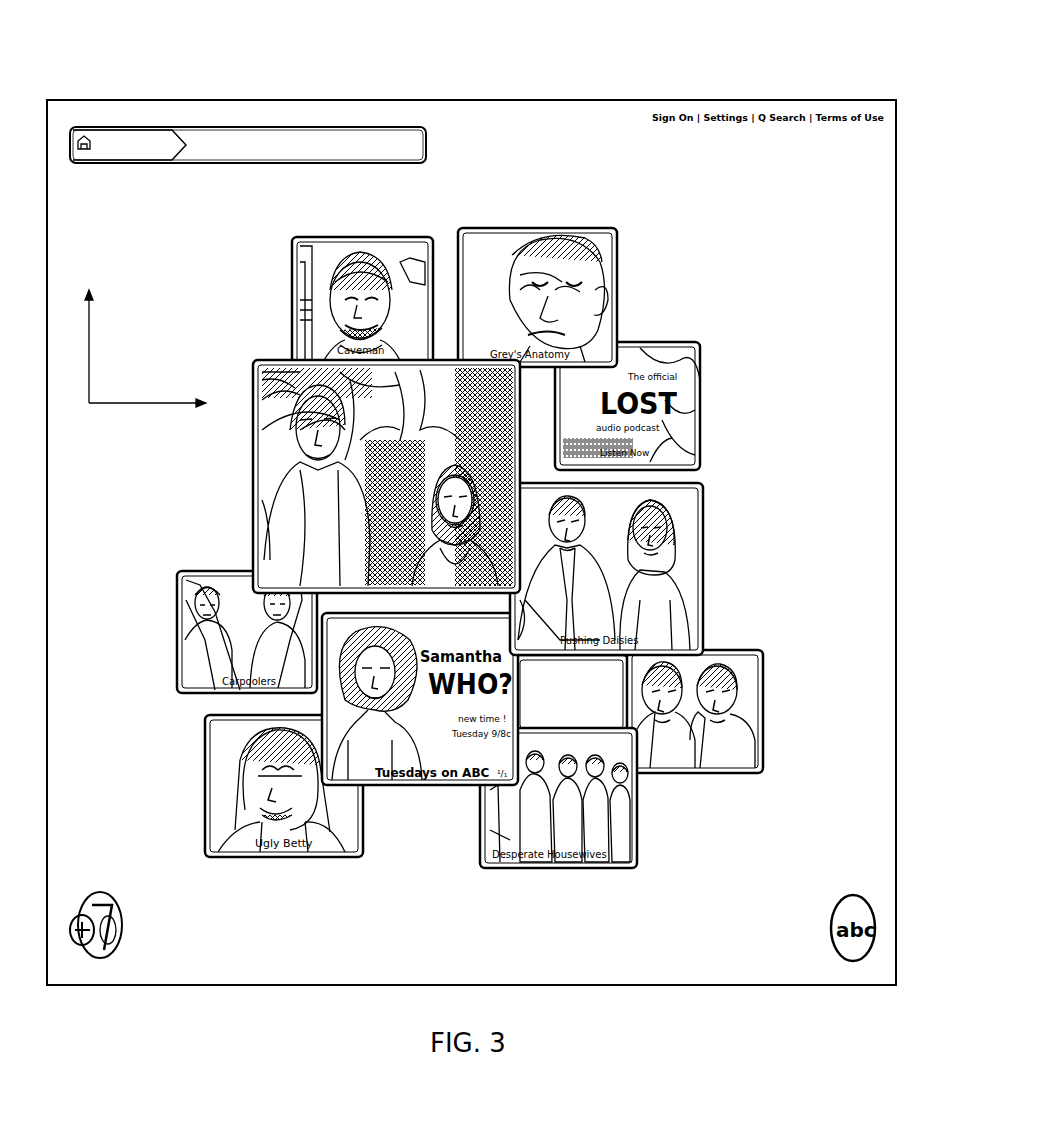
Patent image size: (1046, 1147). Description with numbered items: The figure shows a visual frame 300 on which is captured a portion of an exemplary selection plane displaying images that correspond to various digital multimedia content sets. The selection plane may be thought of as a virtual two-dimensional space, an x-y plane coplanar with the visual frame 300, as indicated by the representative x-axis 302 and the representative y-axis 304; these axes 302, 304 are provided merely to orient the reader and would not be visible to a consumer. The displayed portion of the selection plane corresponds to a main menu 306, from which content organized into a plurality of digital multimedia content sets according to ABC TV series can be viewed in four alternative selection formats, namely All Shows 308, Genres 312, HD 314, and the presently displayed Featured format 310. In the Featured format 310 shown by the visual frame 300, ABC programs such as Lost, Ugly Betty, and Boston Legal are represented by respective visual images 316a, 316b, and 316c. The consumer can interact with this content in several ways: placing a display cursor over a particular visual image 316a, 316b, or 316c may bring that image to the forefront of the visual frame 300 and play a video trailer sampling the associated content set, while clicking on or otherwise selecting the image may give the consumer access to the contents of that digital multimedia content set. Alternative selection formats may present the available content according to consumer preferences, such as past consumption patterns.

The visual frame 300 is at (723, 57).
The representative x-axis 302 is at (105, 410).
The representative y-axis 304 is at (92, 318).
The main menu 306 is at (122, 127).
The All Shows 308 is at (219, 127).
The Featured format 310 is at (293, 127).
The Genres 312 is at (355, 127).
The HD 314 is at (407, 127).
The visual image 316a is at (244, 838).
The visual image 316b is at (322, 558).
The visual image 316c is at (697, 762).